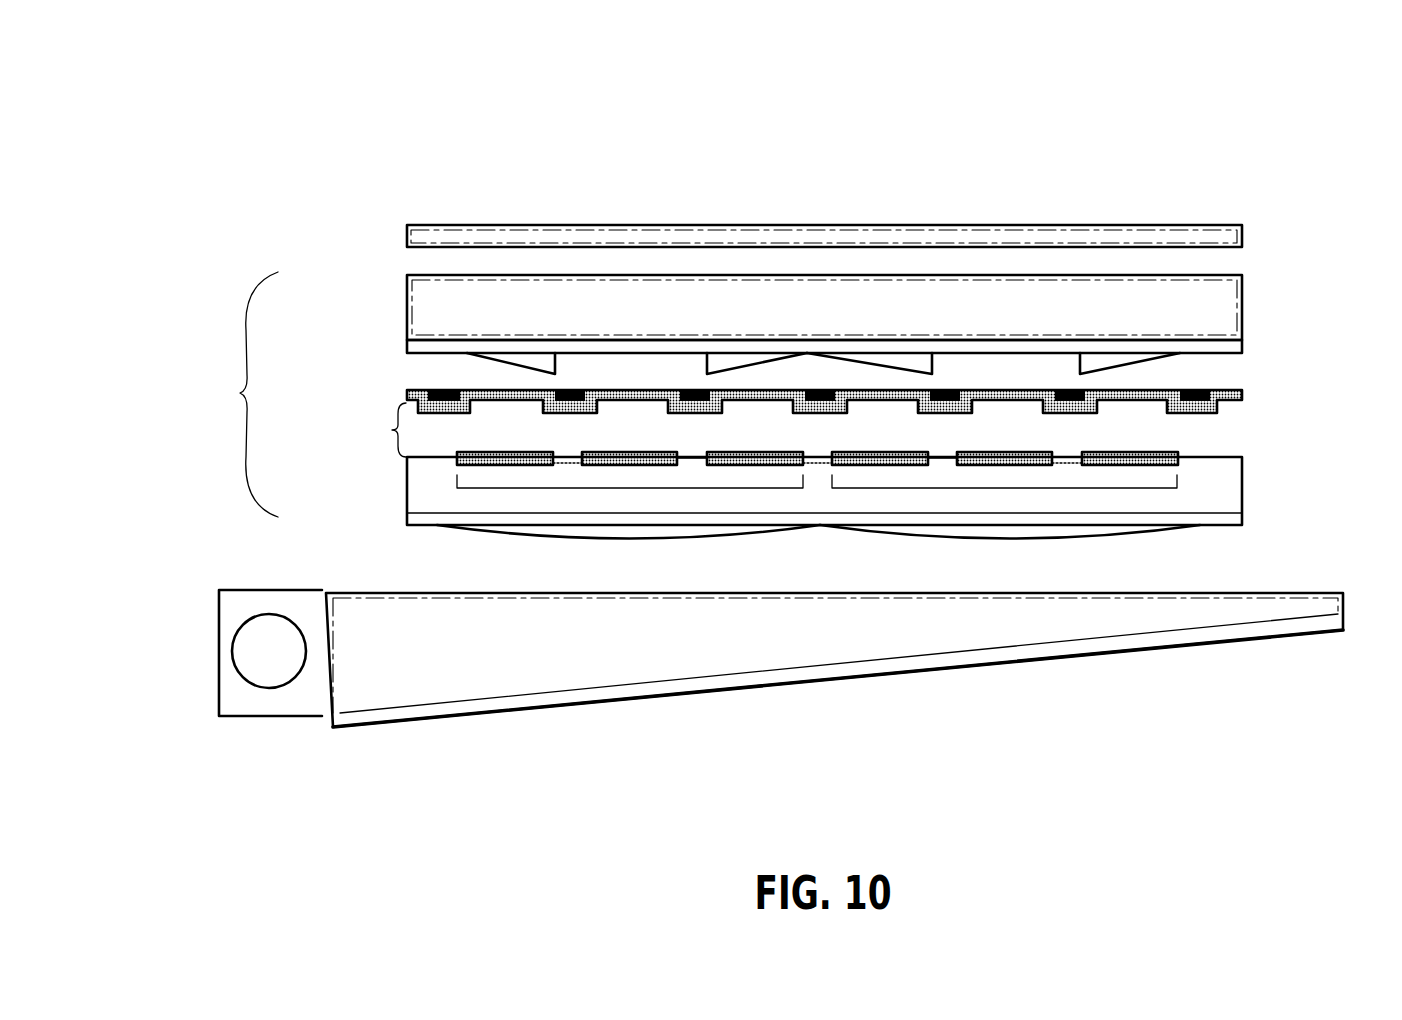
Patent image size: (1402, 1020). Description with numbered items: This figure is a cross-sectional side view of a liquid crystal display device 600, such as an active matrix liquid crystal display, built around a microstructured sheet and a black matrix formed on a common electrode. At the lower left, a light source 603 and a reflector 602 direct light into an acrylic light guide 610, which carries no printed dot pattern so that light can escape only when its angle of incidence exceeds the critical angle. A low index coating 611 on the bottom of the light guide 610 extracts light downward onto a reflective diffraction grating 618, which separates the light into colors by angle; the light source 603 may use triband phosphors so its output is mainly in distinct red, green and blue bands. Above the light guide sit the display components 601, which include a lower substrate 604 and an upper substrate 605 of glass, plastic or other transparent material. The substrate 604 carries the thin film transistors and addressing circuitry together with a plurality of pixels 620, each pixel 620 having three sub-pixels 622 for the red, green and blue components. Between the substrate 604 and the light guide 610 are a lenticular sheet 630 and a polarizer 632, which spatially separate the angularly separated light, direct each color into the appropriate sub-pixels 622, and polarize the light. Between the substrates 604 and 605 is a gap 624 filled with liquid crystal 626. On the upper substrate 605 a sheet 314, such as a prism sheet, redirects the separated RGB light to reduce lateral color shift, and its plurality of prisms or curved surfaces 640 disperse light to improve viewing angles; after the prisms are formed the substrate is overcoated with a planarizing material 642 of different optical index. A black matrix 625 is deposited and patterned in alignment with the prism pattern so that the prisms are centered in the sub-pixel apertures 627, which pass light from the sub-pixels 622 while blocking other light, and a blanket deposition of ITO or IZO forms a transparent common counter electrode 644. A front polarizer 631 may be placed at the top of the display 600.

The liquid crystal display device 600 is at (255, 133).
The display components 601 is at (234, 394).
The front polarizer 631 is at (1243, 237).
The substrate 605 is at (1243, 297).
The sheet 314 is at (403, 341).
The prisms or curved surfaces 640 is at (718, 360).
The planarizing material 642 is at (812, 370).
The transparent common counter electrode 644 is at (1243, 397).
The black matrix 625 is at (443, 389).
The apertures 627 is at (999, 407).
The gap 624 is at (381, 430).
The liquid crystal 626 is at (838, 447).
The sub-pixels 622 is at (530, 452).
The substrate 604 is at (1243, 505).
The polarizer 632 is at (1243, 521).
The pixels 620 is at (633, 488).
The lenticular sheet 630 is at (612, 540).
The acrylic light guide 610 is at (440, 662).
The low index coating 611 is at (835, 665).
The reflective diffraction grating 618 is at (432, 723).
The reflector 602 is at (219, 716).
The light source 603 is at (269, 688).